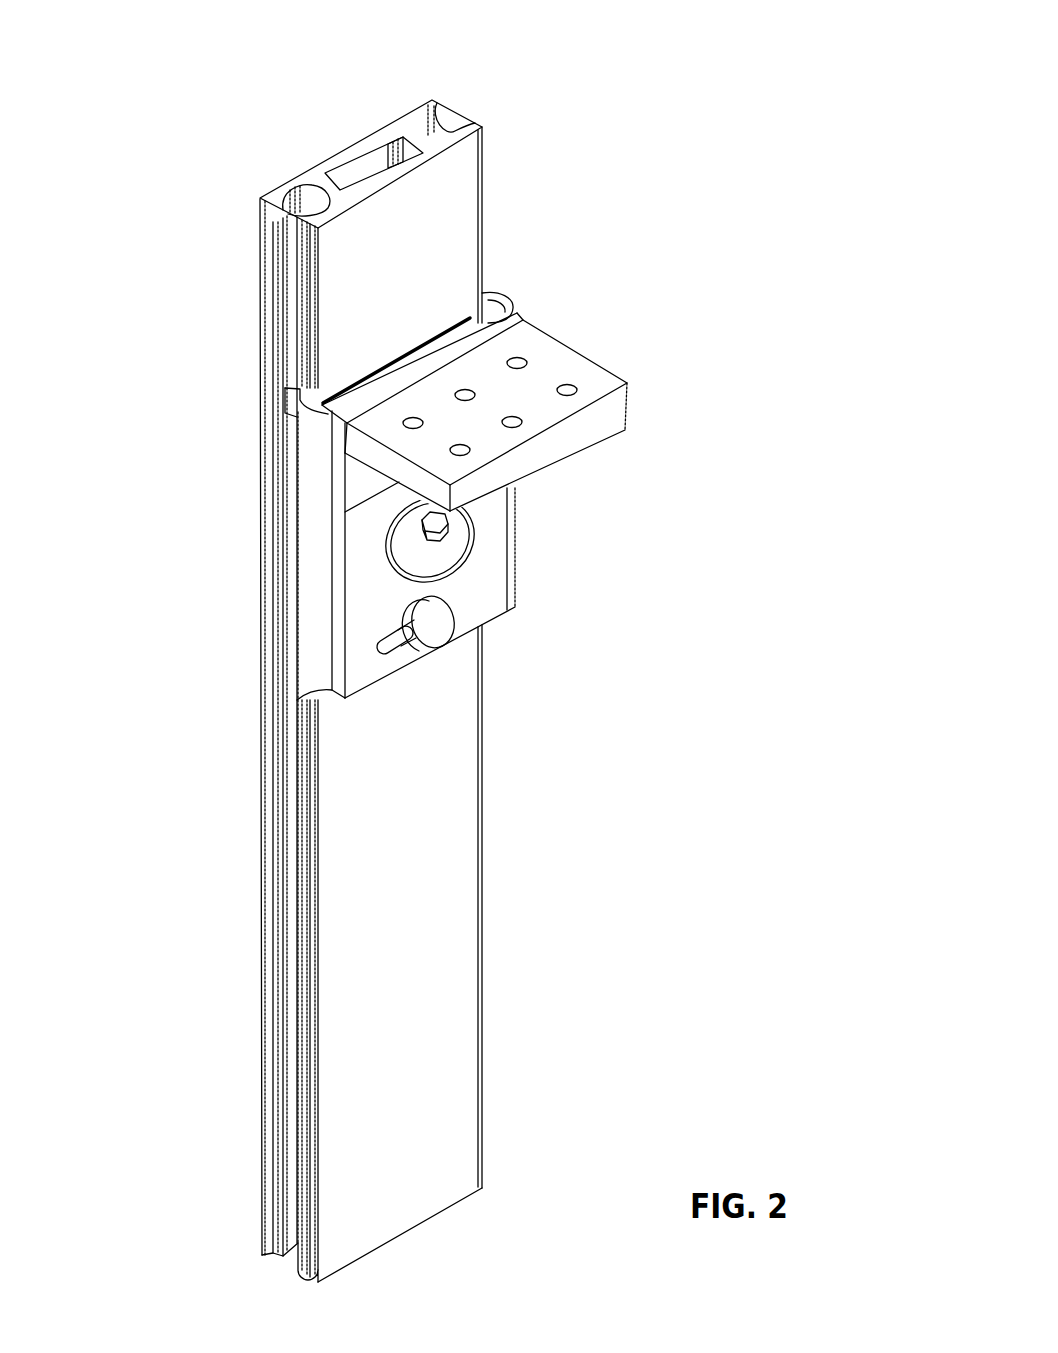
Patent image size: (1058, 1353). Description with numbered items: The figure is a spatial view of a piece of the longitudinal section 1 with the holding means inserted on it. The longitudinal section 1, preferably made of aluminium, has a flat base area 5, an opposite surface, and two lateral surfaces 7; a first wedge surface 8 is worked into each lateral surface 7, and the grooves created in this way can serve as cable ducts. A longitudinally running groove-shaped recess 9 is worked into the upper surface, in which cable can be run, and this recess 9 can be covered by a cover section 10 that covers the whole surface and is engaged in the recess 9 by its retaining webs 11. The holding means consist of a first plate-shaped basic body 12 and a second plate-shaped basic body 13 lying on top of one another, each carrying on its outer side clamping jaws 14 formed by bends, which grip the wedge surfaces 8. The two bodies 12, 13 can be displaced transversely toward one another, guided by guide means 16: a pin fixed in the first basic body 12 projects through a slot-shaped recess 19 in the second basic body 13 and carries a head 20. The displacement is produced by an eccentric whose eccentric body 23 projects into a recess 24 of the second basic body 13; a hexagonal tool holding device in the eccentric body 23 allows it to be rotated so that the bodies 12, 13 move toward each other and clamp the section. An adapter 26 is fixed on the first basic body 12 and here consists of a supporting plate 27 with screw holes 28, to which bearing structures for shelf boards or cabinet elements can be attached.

The longitudinal section 1 is at (335, 98).
The base area 5 is at (258, 161).
The lateral surfaces 7 is at (248, 275).
The first wedge surface 8 is at (288, 216).
The groove-shaped recess 9 is at (357, 173).
The cover section 10 is at (452, 217).
The retaining webs 11 is at (403, 153).
The first plate-shaped basic body 12 is at (290, 678).
The second plate-shaped basic body 13 is at (497, 565).
The clamping jaws 14 is at (293, 412).
The guide means 16 is at (447, 638).
The slot-shaped recess 19 is at (404, 650).
The head 20 is at (437, 615).
The eccentric body 23 is at (402, 536).
The recess 24 is at (410, 598).
The adapter 26 is at (585, 336).
The supporting plate 27 is at (597, 428).
The screw holes 28 is at (567, 390).